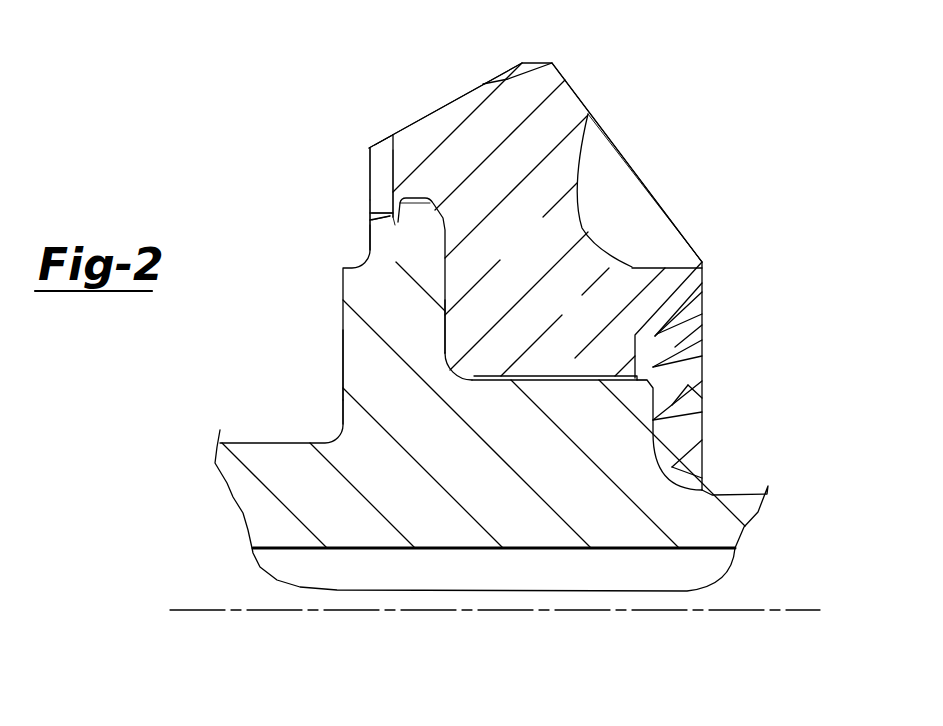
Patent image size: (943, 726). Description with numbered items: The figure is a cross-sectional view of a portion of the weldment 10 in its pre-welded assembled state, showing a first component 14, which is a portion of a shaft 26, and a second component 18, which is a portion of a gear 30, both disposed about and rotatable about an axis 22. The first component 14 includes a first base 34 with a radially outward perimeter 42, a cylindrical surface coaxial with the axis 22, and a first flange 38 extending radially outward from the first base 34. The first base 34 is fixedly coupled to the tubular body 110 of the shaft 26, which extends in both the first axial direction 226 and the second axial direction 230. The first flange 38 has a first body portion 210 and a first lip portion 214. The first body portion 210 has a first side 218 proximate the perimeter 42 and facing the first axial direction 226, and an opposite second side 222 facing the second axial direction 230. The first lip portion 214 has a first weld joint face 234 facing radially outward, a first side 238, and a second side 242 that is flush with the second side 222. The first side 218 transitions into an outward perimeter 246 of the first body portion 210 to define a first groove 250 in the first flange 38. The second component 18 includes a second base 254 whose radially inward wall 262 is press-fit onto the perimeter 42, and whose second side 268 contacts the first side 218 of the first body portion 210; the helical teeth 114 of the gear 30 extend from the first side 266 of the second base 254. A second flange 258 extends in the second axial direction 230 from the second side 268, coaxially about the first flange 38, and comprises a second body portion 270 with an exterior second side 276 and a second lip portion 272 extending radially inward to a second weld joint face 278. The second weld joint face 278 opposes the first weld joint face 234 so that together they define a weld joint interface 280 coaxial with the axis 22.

The weldment 10 is at (205, 75).
The first component 14 is at (480, 408).
The second component 18 is at (568, 271).
The axis 22 is at (788, 612).
The shaft 26 is at (281, 550).
The gear 30 is at (627, 86).
The first base 34 is at (610, 437).
The first flange 38 is at (377, 398).
The radially outward perimeter 42 is at (588, 382).
The tubular body 110 is at (253, 492).
The teeth 114 is at (576, 92).
The first body portion 210 is at (407, 325).
The first lip portion 214 is at (385, 222).
The first side 218 is at (448, 322).
The second side 222 is at (343, 362).
The first axial direction 226 is at (670, 637).
The second axial direction 230 is at (285, 637).
The first weld joint face 234 is at (393, 213).
The first side 238 is at (395, 221).
The second side 242 is at (388, 215).
The outward perimeter 246 is at (532, 305).
The first groove 250 is at (413, 247).
The second base 254 is at (617, 352).
The second flange 258 is at (397, 150).
The radially inward wall 262 is at (538, 382).
The first side 266 is at (603, 247).
The second side 268 is at (447, 325).
The second body portion 270 is at (455, 108).
The second lip portion 272 is at (394, 210).
The second side 276 is at (369, 152).
The second weld joint face 278 is at (394, 225).
The weld joint interface 280 is at (393, 216).